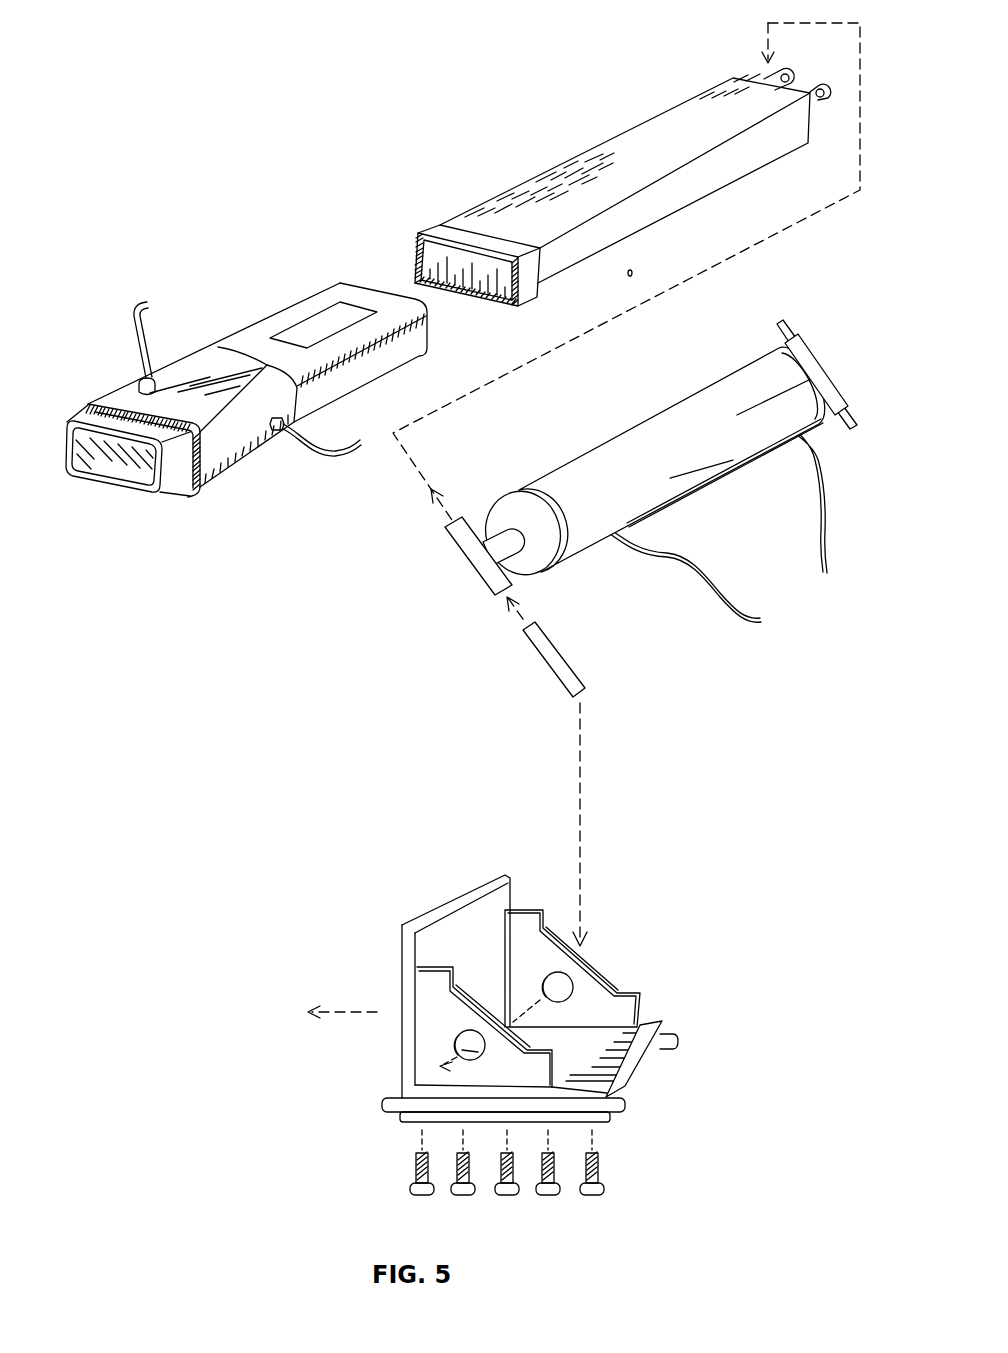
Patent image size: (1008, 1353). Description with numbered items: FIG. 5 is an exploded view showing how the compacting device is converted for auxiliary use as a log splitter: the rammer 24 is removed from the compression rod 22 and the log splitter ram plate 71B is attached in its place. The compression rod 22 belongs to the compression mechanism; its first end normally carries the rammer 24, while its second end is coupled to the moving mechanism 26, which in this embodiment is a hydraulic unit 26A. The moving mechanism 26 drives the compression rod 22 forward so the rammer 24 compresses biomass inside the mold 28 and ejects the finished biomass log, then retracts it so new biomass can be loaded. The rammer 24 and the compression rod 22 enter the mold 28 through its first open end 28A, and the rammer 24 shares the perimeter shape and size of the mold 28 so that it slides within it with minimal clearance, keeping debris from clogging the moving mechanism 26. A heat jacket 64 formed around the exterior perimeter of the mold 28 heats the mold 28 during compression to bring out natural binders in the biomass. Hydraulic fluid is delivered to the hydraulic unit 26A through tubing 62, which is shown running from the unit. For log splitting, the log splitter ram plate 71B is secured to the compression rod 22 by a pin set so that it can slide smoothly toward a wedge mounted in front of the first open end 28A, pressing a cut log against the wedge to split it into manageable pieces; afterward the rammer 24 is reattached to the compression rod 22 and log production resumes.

The compression rod 22 is at (507, 566).
The rammer 24 is at (593, 168).
The moving mechanism 26 is at (651, 465).
The hydraulic unit 26A is at (753, 360).
The mold 28 is at (283, 390).
The first open end 28A is at (427, 327).
The tubing 62 is at (130, 328).
The heat jacket 64 is at (210, 360).
The log splitter ram plate 71B is at (497, 872).